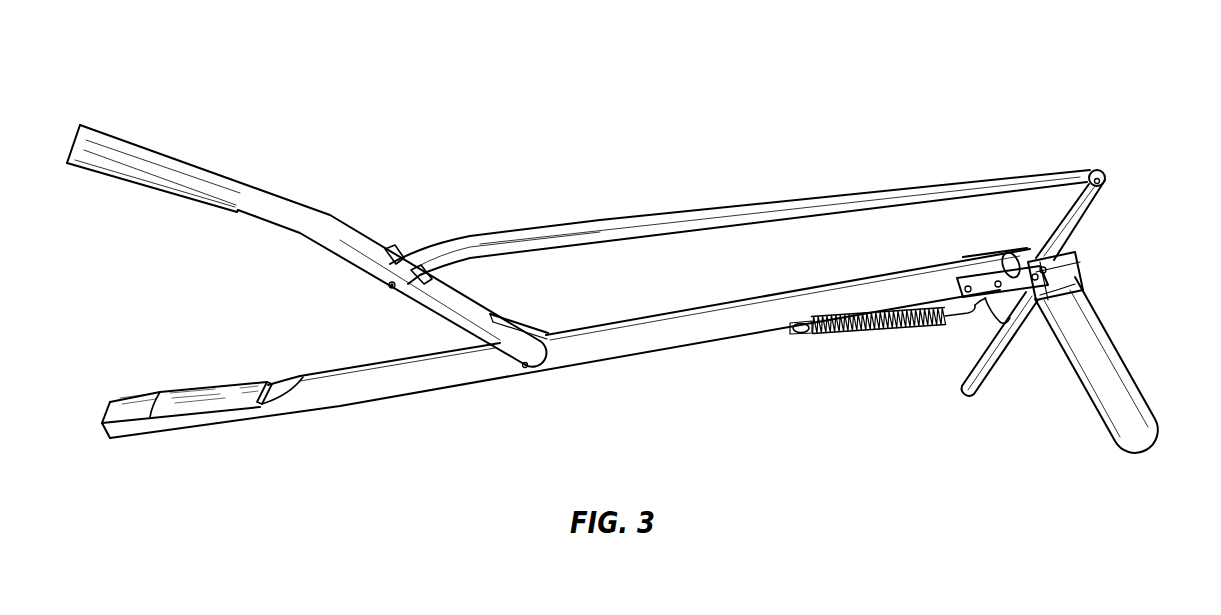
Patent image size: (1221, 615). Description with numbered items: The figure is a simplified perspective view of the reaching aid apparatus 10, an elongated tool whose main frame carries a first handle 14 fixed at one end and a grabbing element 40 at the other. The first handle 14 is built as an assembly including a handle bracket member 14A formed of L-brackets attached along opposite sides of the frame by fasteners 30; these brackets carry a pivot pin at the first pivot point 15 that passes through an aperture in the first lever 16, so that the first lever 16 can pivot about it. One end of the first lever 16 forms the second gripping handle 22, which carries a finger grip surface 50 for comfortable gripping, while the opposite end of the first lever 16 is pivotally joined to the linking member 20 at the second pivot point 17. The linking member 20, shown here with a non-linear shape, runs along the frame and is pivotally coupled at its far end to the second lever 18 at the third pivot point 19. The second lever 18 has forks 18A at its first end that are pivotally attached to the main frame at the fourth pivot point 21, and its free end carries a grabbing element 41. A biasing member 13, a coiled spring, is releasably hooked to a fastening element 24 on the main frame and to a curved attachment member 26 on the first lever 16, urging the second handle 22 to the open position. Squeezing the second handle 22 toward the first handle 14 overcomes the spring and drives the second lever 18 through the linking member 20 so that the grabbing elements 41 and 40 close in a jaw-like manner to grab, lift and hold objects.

The reaching aid apparatus 10 is at (1112, 56).
The biasing member 13 is at (887, 330).
The first handle 14 is at (1123, 355).
The handle bracket member 14A is at (1020, 283).
The first pivot point 15 is at (1057, 267).
The first lever 16 is at (1087, 207).
The second pivot point 17 is at (1093, 172).
The second lever 18 is at (338, 224).
The forks 18A is at (517, 333).
The third pivot point 19 is at (392, 288).
The linking member 20 is at (788, 200).
The fourth pivot point 21 is at (525, 368).
The second gripping handle 22 is at (965, 397).
The fastening element 24 is at (790, 333).
The attachment member 26 is at (995, 303).
The fasteners 30 is at (967, 283).
The grabbing element 40 is at (132, 408).
The grabbing element 41 is at (92, 173).
The finger grip surface 50 is at (972, 375).